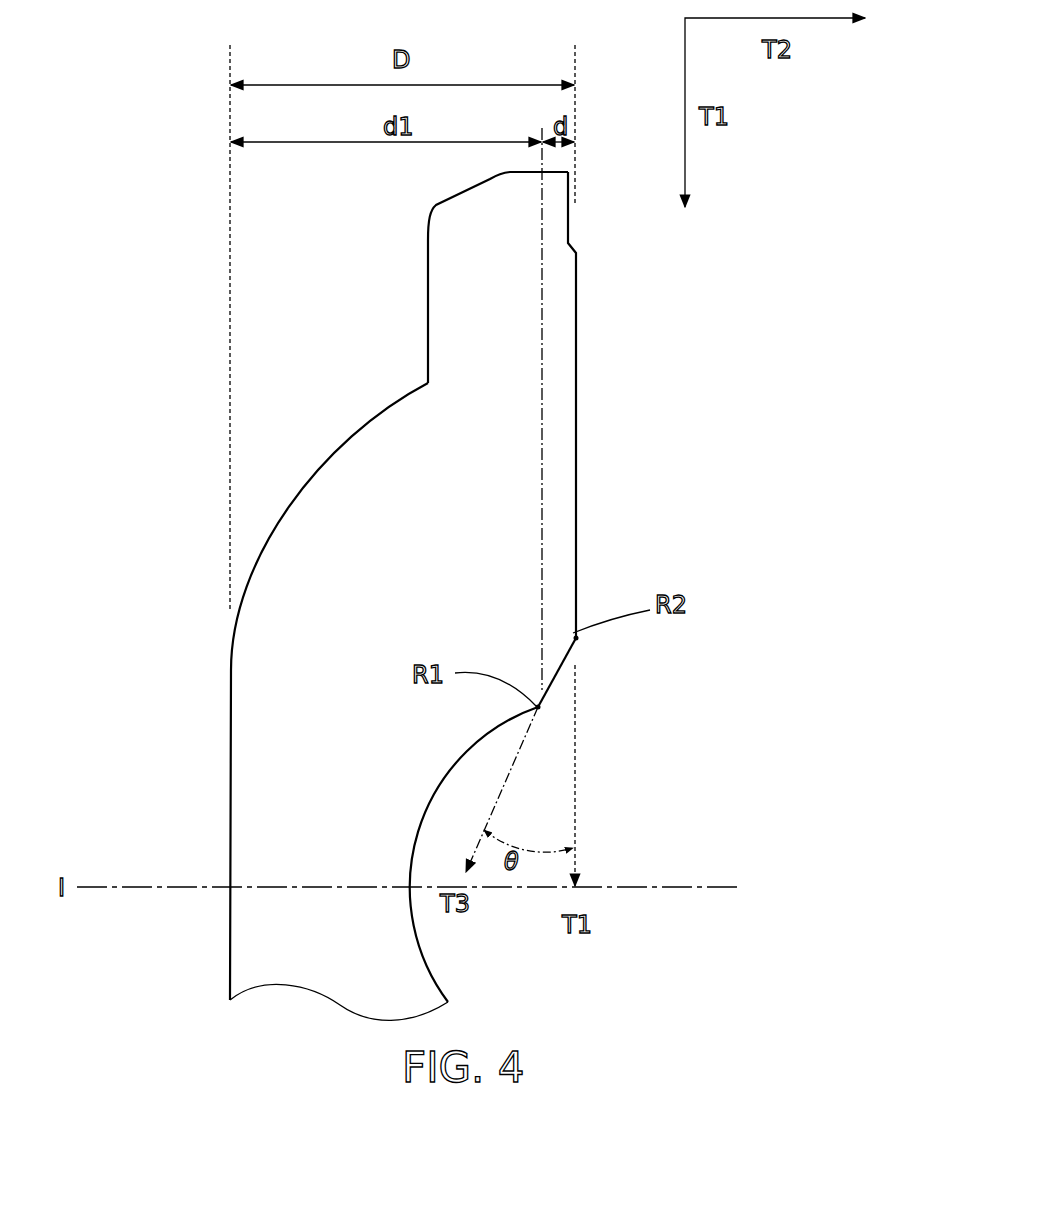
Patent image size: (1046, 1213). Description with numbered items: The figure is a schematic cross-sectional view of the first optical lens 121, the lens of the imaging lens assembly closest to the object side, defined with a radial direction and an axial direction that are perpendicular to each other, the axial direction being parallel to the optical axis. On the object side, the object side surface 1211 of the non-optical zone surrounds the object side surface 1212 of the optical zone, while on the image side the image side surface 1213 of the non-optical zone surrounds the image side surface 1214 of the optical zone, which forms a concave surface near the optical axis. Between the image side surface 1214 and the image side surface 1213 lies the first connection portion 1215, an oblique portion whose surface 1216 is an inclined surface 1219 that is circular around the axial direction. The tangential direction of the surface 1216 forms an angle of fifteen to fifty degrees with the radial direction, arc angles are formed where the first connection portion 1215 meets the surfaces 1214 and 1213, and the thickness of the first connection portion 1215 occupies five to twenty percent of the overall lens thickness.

The first optical lens 121 is at (372, 453).
The object side surface of the non-optical zone 1211 is at (427, 316).
The object side surface of the optical zone 1212 is at (232, 670).
The image side surface of the non-optical zone 1213 is at (577, 402).
The image side surface of the optical zone 1214 is at (417, 823).
The first connection portion 1215 is at (562, 667).
The surface of the first connection portion 1216 is at (560, 680).
The inclined surface 1219 is at (572, 643).